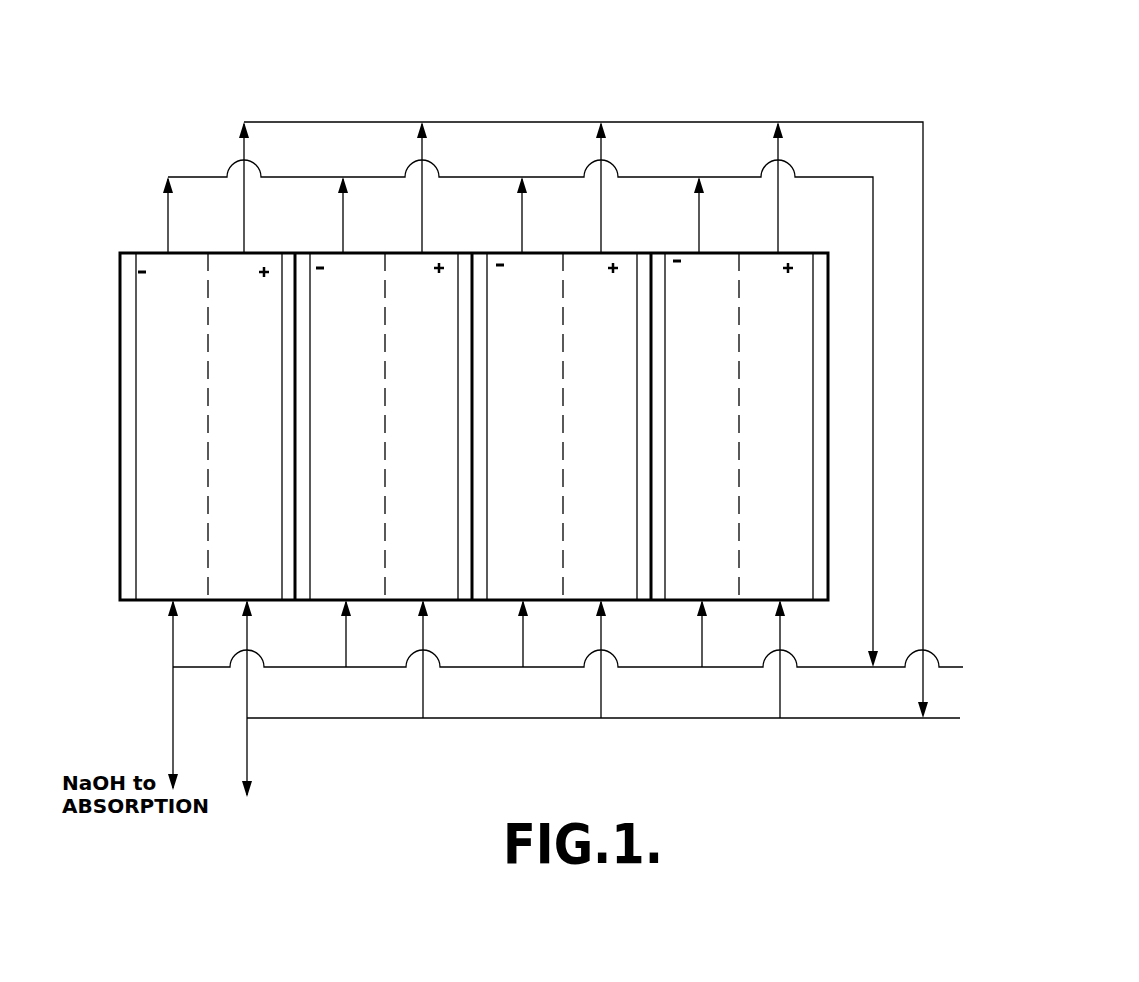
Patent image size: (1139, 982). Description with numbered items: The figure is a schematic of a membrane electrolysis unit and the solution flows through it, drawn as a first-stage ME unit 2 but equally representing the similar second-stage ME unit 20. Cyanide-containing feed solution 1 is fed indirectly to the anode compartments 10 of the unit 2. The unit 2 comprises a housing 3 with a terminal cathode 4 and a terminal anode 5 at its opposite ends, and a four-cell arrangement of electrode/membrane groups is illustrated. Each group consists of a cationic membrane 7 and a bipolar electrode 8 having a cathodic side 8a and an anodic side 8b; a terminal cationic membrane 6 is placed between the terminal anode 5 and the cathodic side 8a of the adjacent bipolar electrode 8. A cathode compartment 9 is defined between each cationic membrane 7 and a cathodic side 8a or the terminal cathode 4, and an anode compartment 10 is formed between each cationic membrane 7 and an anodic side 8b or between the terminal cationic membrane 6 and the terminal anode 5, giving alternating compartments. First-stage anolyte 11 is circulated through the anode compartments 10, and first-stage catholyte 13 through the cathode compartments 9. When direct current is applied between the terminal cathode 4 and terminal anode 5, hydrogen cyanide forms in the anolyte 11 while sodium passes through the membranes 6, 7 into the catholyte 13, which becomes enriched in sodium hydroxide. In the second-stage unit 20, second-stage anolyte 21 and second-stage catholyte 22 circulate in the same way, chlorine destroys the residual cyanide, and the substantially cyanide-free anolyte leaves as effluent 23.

The feed solution 1 is at (676, 701).
The first-stage membrane electrolysis unit 2 is at (109, 596).
The housing 3 is at (152, 253).
The terminal cathode 4 is at (120, 305).
The terminal anode 5 is at (828, 405).
The terminal cationic membrane 6 is at (739, 348).
The cationic membrane 7 is at (208, 352).
The bipolar electrode 8 is at (475, 426).
The cathodic side 8a is at (312, 462).
The anodic side 8b is at (282, 472).
The cathode compartment 9 is at (165, 550).
The anode compartment 10 is at (225, 550).
The first-stage anolyte 11 is at (923, 227).
The first-stage catholyte 13 is at (634, 640).
The second-stage membrane electrolysis unit 20 is at (113, 537).
The second-stage anolyte 21 is at (676, 701).
The second-stage catholyte 22 is at (634, 640).
The effluent 23 is at (317, 736).